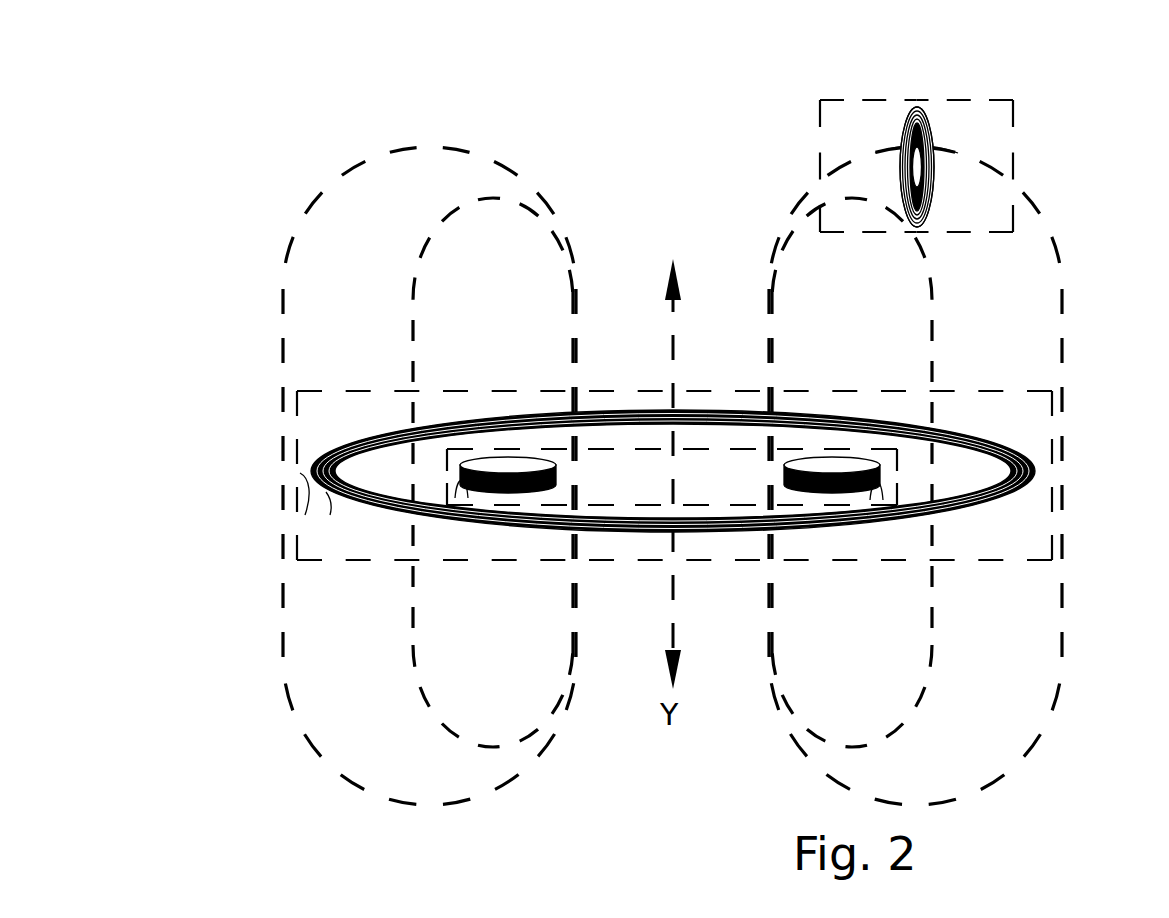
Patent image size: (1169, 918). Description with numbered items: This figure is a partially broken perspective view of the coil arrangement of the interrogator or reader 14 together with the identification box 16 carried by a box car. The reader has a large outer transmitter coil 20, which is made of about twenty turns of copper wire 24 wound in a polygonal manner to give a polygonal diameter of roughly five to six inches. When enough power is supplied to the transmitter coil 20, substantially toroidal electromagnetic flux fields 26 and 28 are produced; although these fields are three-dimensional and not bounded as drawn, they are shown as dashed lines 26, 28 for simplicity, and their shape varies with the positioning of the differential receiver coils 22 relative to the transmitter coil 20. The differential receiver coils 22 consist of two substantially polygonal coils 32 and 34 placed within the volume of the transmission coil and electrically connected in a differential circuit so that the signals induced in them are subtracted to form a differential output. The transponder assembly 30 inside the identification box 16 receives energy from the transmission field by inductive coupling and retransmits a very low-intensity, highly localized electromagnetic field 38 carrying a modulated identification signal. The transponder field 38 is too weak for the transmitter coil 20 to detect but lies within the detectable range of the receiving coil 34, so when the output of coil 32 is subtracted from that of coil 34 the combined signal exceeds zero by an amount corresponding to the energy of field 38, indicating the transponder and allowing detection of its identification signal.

The interrogator or reader 14 is at (1040, 392).
The identification box 16 is at (968, 232).
The transmitter coil 20 is at (348, 442).
The differential receiver coils 22 is at (900, 467).
The copper wire 24 is at (300, 473).
The flux field 26 is at (575, 312).
The flux field 28 is at (771, 298).
The transponder assembly 30 is at (920, 167).
The polygonal coil 32 is at (528, 457).
The polygonal coil 34 is at (812, 457).
The electromagnetic field 38 is at (899, 130).